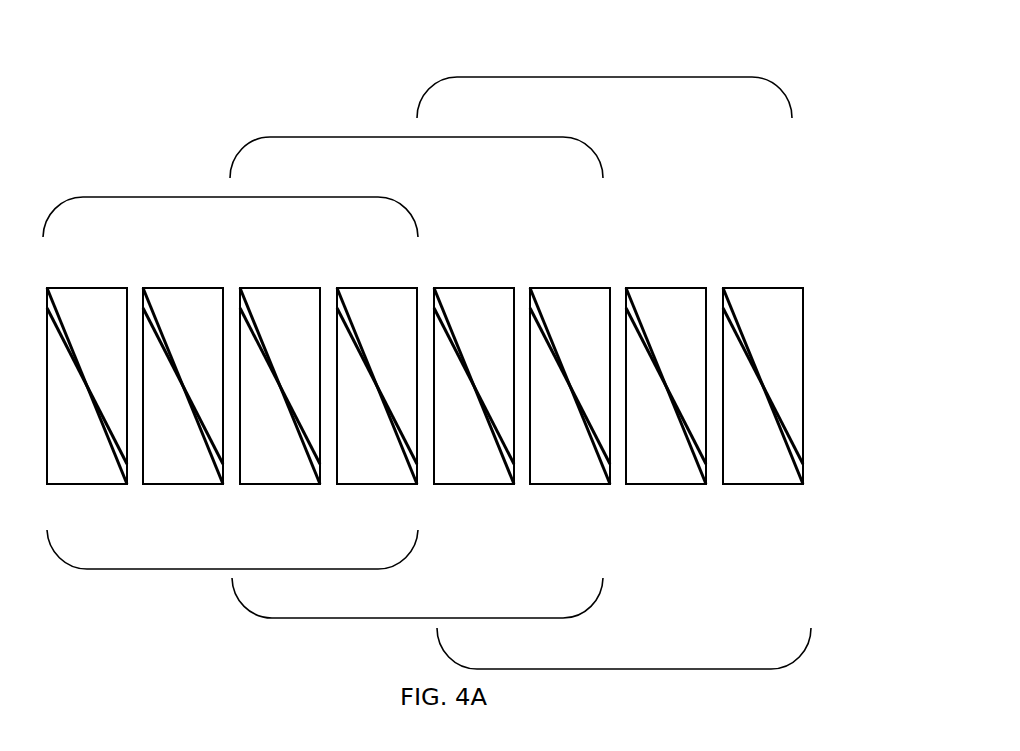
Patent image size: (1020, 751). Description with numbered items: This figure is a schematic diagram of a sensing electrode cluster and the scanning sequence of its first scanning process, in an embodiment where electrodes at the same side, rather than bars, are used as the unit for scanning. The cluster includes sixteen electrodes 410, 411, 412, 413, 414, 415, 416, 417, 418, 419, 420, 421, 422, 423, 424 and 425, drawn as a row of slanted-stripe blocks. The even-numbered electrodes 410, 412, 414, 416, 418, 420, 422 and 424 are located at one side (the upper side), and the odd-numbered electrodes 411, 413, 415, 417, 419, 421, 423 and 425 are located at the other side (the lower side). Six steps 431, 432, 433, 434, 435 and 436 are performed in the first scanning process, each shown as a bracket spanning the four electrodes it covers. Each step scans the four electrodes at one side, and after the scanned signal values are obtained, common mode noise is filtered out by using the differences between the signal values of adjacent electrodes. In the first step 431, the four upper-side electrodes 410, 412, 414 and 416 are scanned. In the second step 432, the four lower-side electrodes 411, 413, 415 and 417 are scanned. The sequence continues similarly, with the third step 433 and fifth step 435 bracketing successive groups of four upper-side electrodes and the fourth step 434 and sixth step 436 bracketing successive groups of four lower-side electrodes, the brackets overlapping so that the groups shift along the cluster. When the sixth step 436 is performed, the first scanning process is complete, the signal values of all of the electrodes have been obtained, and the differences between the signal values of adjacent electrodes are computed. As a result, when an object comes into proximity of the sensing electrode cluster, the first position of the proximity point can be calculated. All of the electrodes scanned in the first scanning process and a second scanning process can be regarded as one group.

The electrode 410 is at (65, 288).
The electrode 411 is at (105, 484).
The electrode 412 is at (161, 288).
The electrode 413 is at (201, 484).
The electrode 414 is at (258, 288).
The electrode 415 is at (298, 484).
The electrode 416 is at (355, 288).
The electrode 417 is at (395, 484).
The electrode 418 is at (452, 288).
The electrode 419 is at (492, 484).
The electrode 420 is at (548, 288).
The electrode 421 is at (588, 484).
The electrode 422 is at (644, 288).
The electrode 423 is at (684, 484).
The electrode 424 is at (741, 288).
The electrode 425 is at (781, 484).
The first step of first scanning process 431 is at (230, 219).
The second step of first scanning process 432 is at (232, 548).
The third step of first scanning process 433 is at (416, 159).
The fourth step of first scanning process 434 is at (417, 597).
The fifth step of first scanning process 435 is at (604, 99).
The sixth step of first scanning process 436 is at (624, 648).